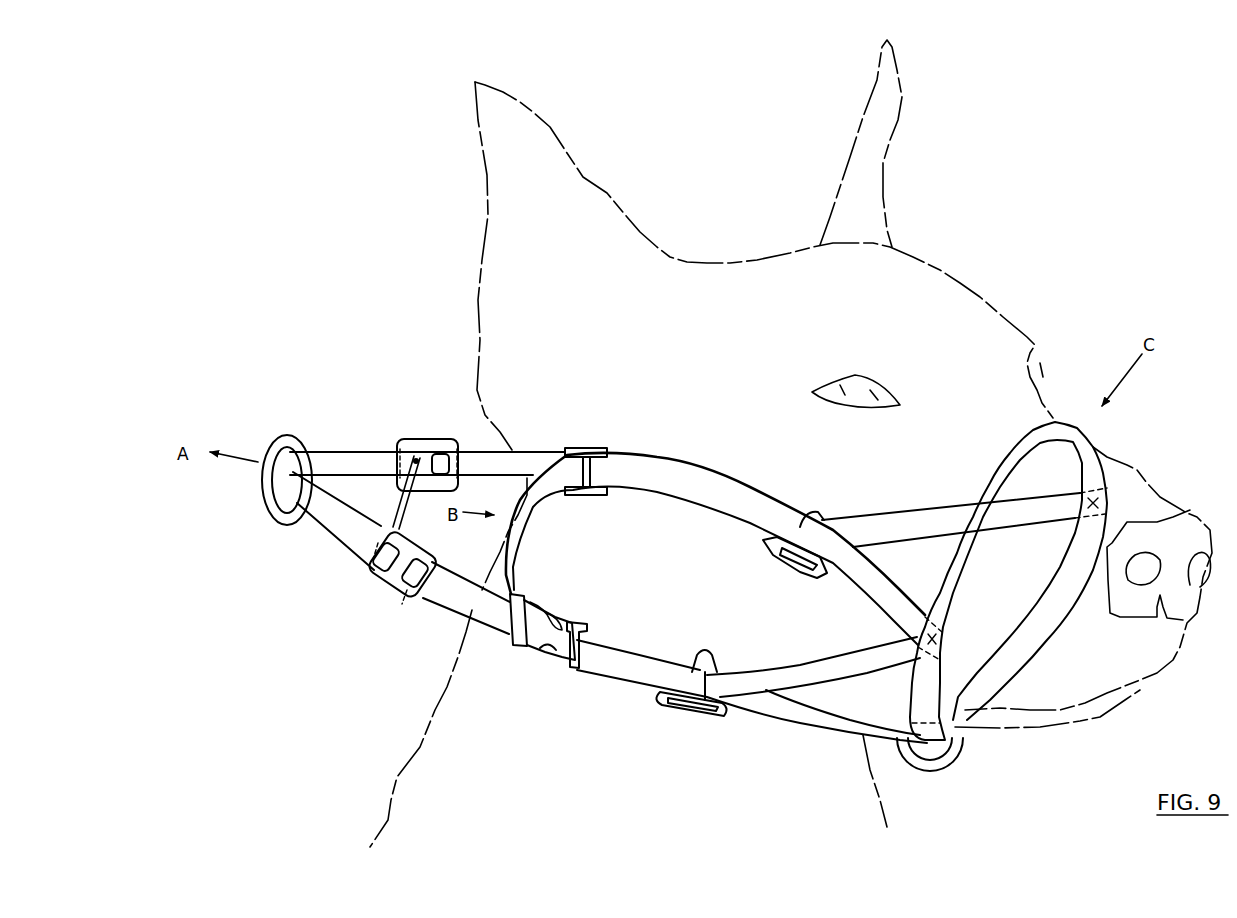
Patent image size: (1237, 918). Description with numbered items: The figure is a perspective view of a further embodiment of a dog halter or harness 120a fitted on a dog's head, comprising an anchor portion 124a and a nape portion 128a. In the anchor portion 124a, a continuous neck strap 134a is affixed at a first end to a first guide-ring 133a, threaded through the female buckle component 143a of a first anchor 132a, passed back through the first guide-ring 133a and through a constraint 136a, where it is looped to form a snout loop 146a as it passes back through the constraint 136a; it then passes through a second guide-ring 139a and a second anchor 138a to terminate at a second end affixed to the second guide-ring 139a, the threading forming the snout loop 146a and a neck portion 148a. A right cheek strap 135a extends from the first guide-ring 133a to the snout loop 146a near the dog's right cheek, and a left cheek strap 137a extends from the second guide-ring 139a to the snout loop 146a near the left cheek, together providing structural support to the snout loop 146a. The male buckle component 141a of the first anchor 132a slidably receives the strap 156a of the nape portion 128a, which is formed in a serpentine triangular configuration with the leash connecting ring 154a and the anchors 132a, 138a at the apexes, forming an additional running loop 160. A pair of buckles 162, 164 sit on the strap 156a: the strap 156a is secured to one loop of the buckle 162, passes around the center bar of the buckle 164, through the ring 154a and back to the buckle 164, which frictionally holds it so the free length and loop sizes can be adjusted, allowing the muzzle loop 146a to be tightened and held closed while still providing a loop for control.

The harness 120a is at (728, 340).
The anchor portion 124a is at (616, 755).
The nape portion 128a is at (354, 642).
The first anchor 132a is at (524, 660).
The first guide-ring 133a is at (687, 712).
The neck strap 134a is at (673, 494).
The right cheek strap 135a is at (802, 675).
The constraint 136a is at (960, 755).
The left cheek strap 137a is at (862, 515).
The second anchor 138a is at (588, 438).
The second guide-ring 139a is at (783, 575).
The male buckle component 141a is at (527, 600).
The female buckle component 143a is at (582, 627).
The snout loop 146a is at (1033, 599).
The neck portion 148a is at (703, 598).
The leash connecting ring 154a is at (273, 523).
The strap 156a is at (552, 528).
The running loop 160 is at (350, 494).
The buckle 162 is at (417, 603).
The buckle 164 is at (453, 438).